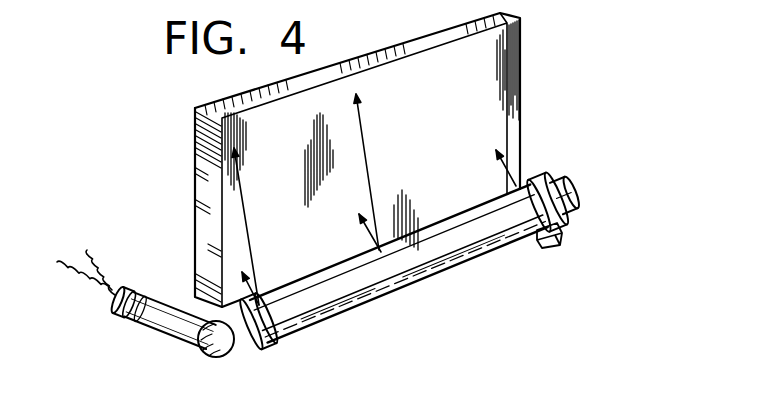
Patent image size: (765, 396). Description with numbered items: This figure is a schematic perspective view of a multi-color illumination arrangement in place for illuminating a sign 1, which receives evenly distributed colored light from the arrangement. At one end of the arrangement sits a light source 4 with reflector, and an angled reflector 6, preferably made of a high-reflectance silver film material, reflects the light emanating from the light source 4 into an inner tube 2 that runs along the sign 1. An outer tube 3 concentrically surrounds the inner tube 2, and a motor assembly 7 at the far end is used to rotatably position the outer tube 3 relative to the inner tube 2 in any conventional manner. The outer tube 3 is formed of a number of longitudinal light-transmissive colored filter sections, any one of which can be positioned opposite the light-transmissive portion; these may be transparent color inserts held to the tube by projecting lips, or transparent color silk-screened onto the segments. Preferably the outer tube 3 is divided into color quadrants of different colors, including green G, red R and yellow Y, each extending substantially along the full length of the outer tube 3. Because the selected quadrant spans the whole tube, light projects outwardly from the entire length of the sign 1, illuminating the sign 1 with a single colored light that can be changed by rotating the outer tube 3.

The sign 1 is at (521, 77).
The inner tube 2 is at (264, 343).
The outer tube 3 is at (427, 282).
The light source 4 is at (122, 301).
The reflector 6 is at (221, 357).
The motor assembly 7 is at (565, 199).
The red color quadrant R is at (496, 200).
The yellow color quadrant Y is at (505, 230).
The green color quadrant G is at (373, 297).